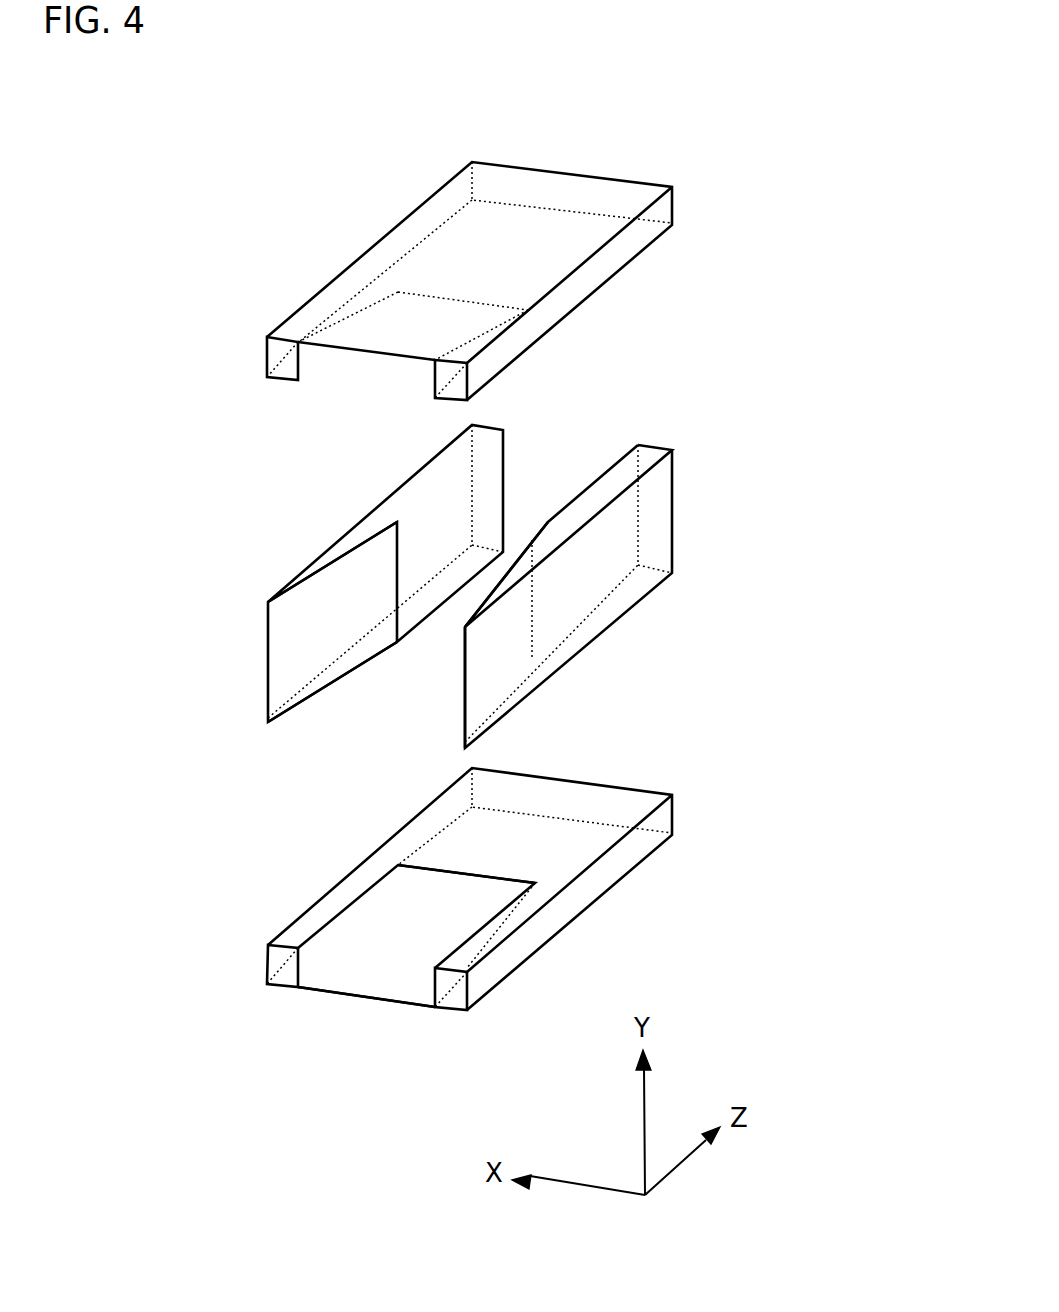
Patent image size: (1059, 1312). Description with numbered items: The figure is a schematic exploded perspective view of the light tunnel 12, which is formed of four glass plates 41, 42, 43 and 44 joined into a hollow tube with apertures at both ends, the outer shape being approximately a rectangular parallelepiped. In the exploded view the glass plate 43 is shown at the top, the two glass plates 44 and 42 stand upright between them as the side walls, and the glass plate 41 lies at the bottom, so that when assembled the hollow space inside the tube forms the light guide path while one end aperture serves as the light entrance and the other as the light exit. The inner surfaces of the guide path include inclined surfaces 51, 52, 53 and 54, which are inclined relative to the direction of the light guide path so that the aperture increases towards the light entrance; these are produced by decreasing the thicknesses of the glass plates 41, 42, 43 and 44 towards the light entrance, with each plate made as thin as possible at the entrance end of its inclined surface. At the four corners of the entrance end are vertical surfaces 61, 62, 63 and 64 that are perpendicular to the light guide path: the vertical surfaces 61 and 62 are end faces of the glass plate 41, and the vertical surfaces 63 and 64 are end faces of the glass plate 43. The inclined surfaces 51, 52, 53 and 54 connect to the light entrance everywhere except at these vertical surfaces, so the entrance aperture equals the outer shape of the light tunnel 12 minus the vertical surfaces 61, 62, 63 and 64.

The light tunnel 12 is at (492, 68).
The glass plate 41 is at (591, 925).
The glass plate 42 is at (690, 509).
The glass plate 43 is at (365, 240).
The glass plate 44 is at (345, 527).
The inclined surface 51 is at (388, 970).
The inclined surface 52 is at (485, 667).
The inclined surface 53 is at (405, 333).
The inclined surface 54 is at (303, 632).
The vertical surface 61 is at (275, 982).
The vertical surface 62 is at (453, 993).
The vertical surface 63 is at (455, 385).
The vertical surface 64 is at (287, 347).